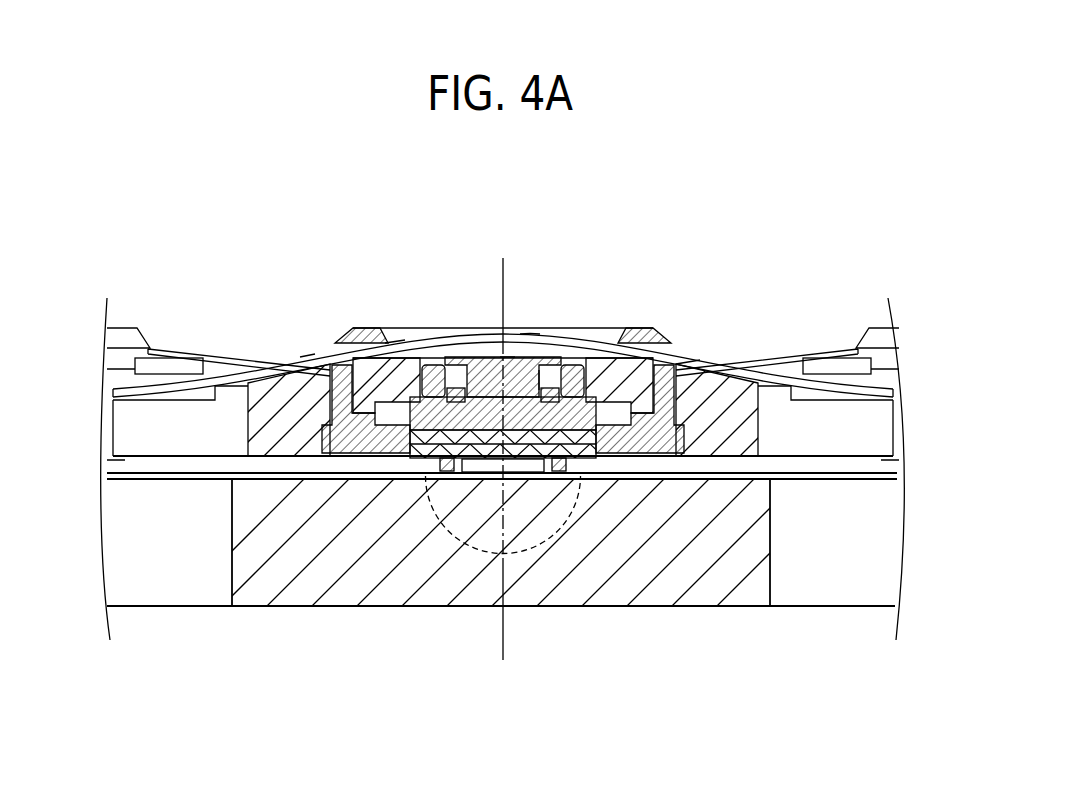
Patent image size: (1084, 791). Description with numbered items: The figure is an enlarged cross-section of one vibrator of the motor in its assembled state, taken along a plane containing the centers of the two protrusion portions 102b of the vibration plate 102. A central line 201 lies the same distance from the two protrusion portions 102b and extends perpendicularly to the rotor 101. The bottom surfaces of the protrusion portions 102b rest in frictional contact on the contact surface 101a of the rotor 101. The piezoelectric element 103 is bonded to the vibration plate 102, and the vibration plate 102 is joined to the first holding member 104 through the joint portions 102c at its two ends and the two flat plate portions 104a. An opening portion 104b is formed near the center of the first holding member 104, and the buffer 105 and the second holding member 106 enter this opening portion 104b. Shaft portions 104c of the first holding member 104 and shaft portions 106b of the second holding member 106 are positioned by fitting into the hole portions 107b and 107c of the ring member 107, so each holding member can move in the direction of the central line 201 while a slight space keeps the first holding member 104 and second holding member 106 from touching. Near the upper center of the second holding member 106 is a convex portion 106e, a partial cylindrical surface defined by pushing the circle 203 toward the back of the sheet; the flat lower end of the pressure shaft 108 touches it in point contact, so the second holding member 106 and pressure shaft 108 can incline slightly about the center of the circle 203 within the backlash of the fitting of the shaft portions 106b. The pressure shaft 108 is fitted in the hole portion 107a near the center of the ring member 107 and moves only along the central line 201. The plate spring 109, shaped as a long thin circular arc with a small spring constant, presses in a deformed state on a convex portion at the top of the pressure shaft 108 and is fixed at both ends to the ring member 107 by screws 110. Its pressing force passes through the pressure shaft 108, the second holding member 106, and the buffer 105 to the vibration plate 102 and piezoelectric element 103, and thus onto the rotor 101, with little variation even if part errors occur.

The rotor 101 is at (252, 590).
The contact surface 101a is at (613, 481).
The vibration plate 102 is at (377, 479).
The protrusion portions 102b is at (445, 480).
The joint portions 102c is at (320, 480).
The piezoelectric element 103 is at (658, 365).
The first holding member 104 is at (365, 343).
The flat plate portions 104a is at (327, 437).
The opening portion 104b is at (420, 480).
The shaft portions 104c is at (690, 365).
The buffer 105 is at (424, 365).
The second holding member 106 is at (468, 357).
The shaft portions 106b is at (573, 342).
The convex portion 106e is at (520, 355).
The ring member 107 is at (277, 392).
The hole portion 107a is at (545, 341).
The hole portions 107b is at (313, 380).
The hole portions 107c is at (395, 345).
The pressure shaft 108 is at (570, 365).
The plate spring 109 is at (232, 363).
The screws 110 is at (177, 366).
The central line 201 is at (508, 625).
The circle 203 is at (466, 473).